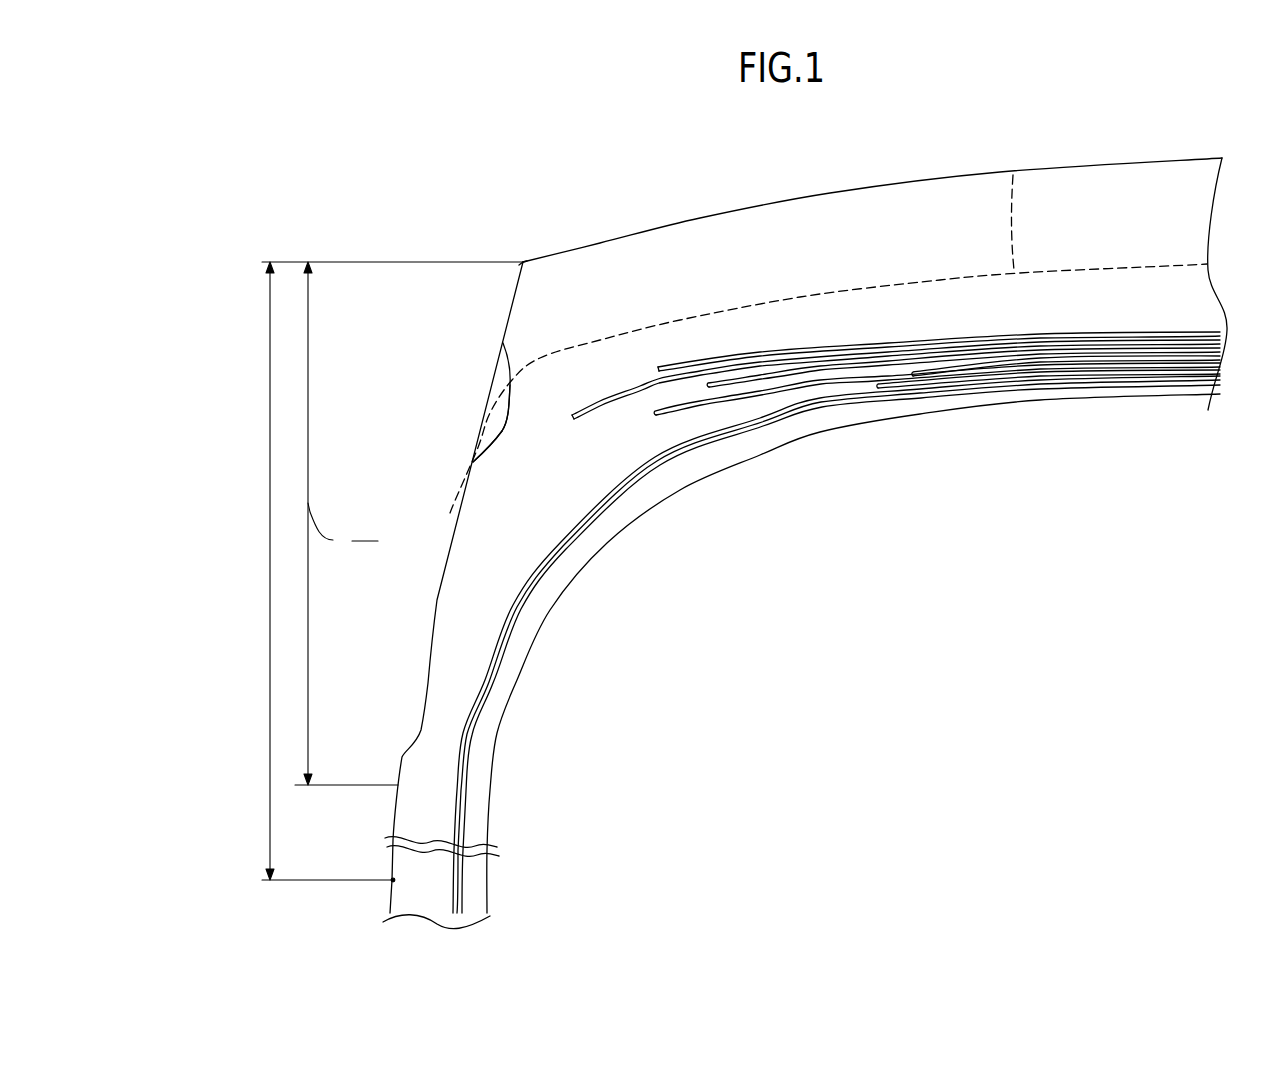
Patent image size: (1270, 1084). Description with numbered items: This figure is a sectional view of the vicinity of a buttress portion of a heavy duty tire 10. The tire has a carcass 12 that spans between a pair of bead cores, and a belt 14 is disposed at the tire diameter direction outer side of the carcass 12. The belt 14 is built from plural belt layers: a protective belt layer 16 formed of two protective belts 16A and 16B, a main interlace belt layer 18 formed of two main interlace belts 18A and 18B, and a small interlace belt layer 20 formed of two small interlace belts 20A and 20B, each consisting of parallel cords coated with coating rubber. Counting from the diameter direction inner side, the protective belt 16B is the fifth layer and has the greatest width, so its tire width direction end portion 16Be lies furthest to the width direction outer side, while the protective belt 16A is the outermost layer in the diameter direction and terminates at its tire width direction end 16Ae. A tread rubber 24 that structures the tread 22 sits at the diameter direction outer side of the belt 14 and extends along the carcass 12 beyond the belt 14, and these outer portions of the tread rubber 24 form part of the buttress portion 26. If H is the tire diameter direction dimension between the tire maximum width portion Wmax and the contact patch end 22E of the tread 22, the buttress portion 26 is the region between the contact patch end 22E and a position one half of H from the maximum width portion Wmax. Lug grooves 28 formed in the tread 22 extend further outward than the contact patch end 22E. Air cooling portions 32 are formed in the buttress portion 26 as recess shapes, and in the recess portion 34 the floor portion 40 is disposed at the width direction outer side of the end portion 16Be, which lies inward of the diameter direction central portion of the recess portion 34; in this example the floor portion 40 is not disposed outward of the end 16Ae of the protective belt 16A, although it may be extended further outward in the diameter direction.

The heavy duty tire 10 is at (426, 178).
The carcass 12 is at (459, 727).
The belt 14 is at (888, 333).
The protective belt layer 16 is at (675, 129).
The protective belt 16A is at (681, 365).
The protective belt 16B is at (606, 392).
The tire width direction end 16Ae is at (657, 365).
The tire width direction end portion 16Be is at (572, 414).
The main interlace belt layer 18 is at (808, 558).
The main interlace belt 18A is at (713, 392).
The main interlace belt 18B is at (657, 418).
The small interlace belt layer 20 is at (1023, 483).
The small interlace belt 20A is at (947, 380).
The small interlace belt 20B is at (884, 392).
The tread 22 is at (1125, 168).
The contact patch end 22E is at (522, 261).
The tread rubber 24 is at (930, 237).
The buttress portion 26 is at (500, 323).
The lug groove 28 is at (1013, 175).
The air cooling portion 32 is at (497, 382).
The recess portion 34 is at (483, 433).
The floor portion 40 is at (506, 417).
The tire diameter direction dimension H is at (270, 555).
The tire maximum width portion Wmax is at (393, 880).